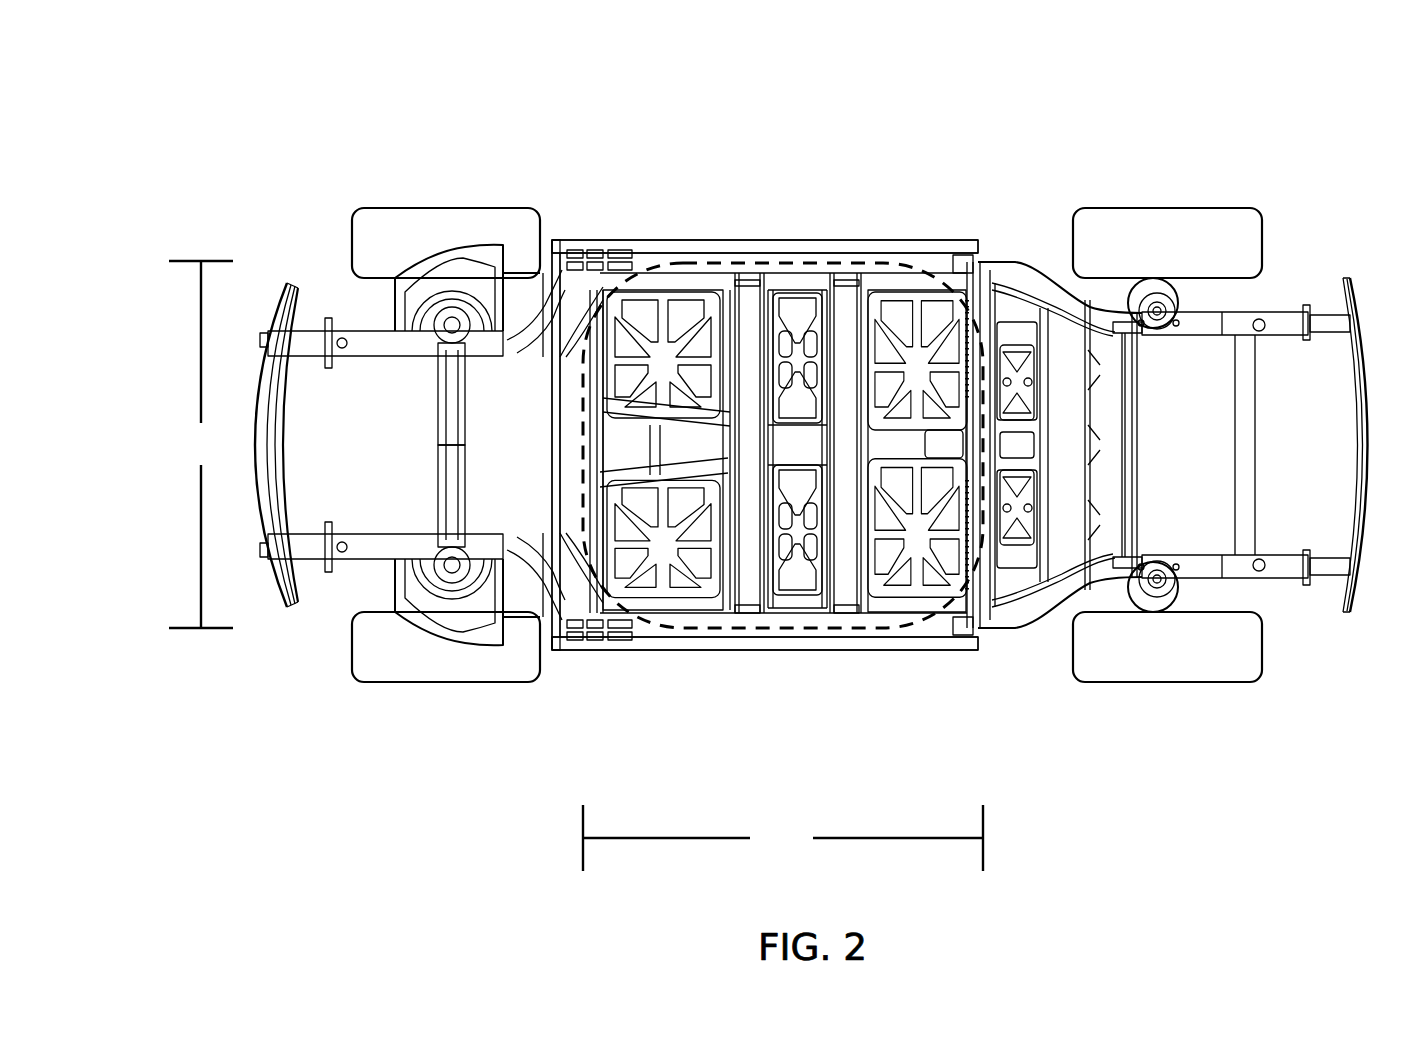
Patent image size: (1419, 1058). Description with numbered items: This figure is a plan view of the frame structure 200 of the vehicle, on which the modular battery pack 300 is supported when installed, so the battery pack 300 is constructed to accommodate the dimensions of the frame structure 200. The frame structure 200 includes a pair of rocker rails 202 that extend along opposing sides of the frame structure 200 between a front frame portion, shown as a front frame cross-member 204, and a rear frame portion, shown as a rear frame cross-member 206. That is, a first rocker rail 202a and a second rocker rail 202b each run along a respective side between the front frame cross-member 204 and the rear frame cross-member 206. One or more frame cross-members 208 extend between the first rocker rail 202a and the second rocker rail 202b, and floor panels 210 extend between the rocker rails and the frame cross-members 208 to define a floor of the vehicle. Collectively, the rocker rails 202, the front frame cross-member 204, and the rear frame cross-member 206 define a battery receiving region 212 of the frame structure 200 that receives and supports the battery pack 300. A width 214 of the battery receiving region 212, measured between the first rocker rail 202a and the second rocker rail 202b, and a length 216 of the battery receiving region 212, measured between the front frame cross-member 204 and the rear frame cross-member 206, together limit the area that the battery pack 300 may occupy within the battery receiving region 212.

The frame structure 200 is at (378, 88).
The rocker rails 202 is at (730, 248).
The first rocker rail 202a is at (765, 211).
The second rocker rail 202b is at (773, 699).
The front frame cross-member 204 is at (583, 540).
The rear frame cross-member 206 is at (986, 262).
The frame cross-members 208 is at (752, 292).
The floor panels 210 is at (694, 600).
The battery receiving region 212 is at (648, 258).
The width 214 is at (201, 444).
The length 216 is at (783, 838).
The modular battery pack 300 is at (536, 461).